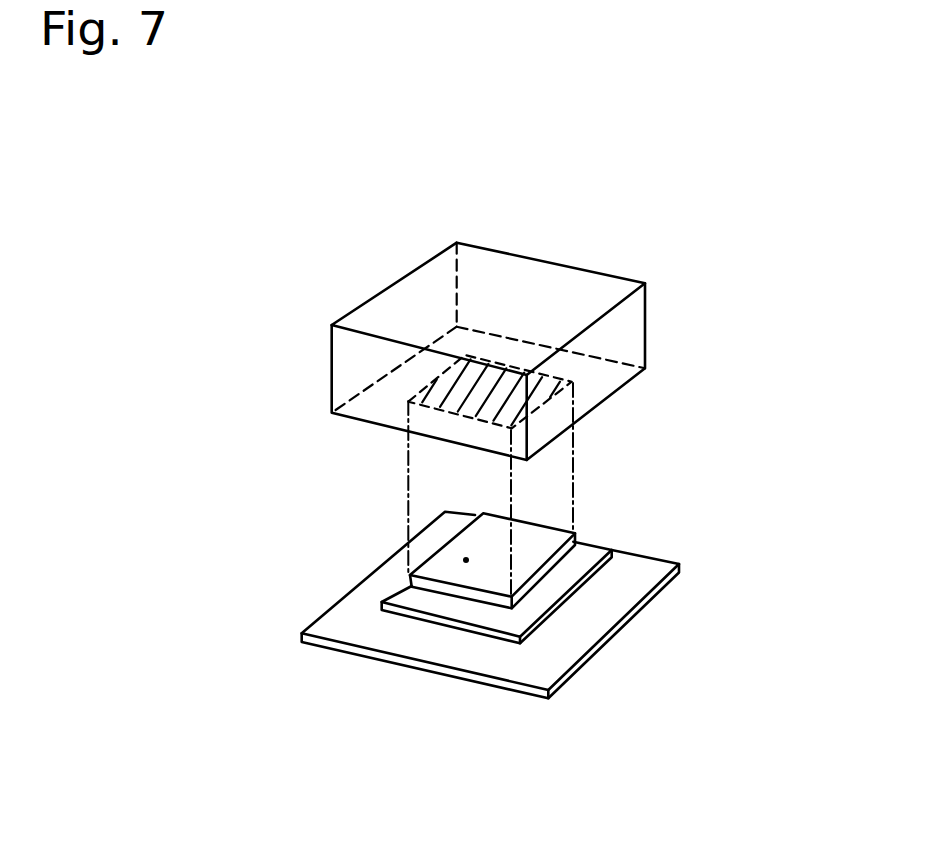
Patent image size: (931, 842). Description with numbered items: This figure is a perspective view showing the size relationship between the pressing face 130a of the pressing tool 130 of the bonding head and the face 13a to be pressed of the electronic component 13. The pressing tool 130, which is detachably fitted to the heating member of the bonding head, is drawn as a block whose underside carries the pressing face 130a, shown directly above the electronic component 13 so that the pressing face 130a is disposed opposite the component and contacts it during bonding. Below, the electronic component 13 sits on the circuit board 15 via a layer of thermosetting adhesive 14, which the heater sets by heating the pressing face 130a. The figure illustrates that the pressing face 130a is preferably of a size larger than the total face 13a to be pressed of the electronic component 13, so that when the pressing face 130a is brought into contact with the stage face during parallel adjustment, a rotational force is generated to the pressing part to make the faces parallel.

The pressing tool 130 is at (571, 342).
The pressing face 130a is at (386, 420).
The electronic component 13 is at (594, 522).
The face to be pressed 13a is at (349, 547).
The thermosetting adhesive 14 is at (591, 565).
The circuit board 15 is at (554, 605).